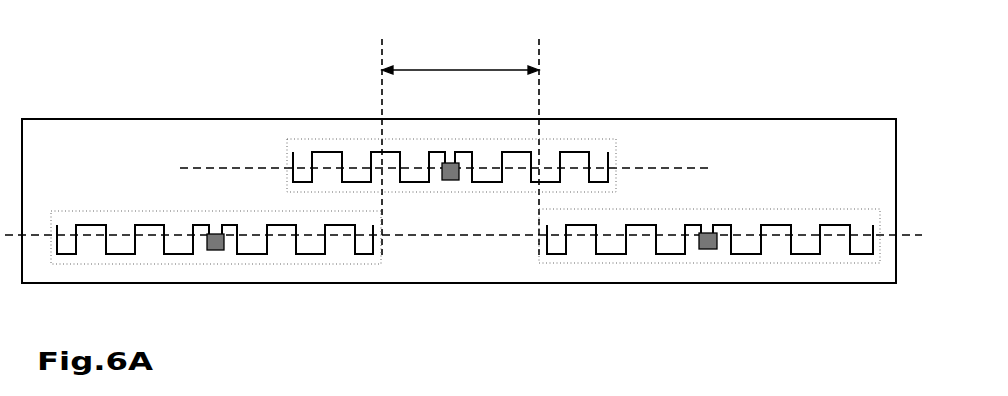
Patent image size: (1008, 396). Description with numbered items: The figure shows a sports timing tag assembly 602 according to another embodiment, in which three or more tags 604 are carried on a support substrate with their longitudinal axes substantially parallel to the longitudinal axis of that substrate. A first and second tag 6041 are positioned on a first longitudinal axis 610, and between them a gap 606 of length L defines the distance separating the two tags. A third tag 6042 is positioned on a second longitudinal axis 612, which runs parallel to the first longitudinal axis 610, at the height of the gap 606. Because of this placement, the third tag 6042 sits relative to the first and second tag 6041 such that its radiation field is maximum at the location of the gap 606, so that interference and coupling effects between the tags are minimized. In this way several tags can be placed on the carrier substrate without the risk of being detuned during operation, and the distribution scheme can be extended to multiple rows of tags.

The sports timing tag assembly 602 is at (459, 179).
The tags 604 is at (465, 198).
The first and second tag 6041 is at (593, 153).
The third tag 6042 is at (145, 253).
The gap 606 is at (466, 246).
The first longitudinal axis 610 is at (418, 235).
The second longitudinal axis 612 is at (237, 166).
The length of the gap L is at (460, 139).